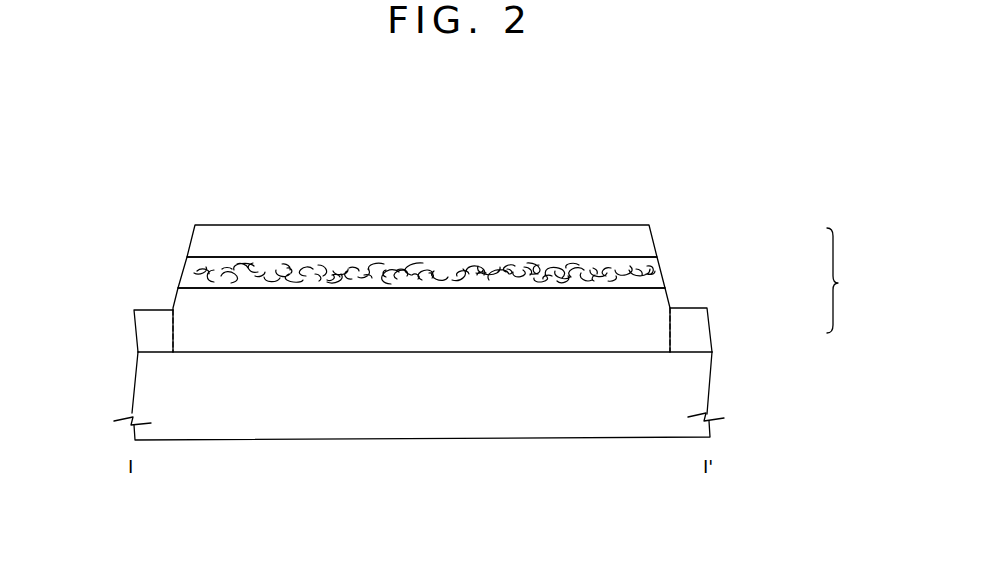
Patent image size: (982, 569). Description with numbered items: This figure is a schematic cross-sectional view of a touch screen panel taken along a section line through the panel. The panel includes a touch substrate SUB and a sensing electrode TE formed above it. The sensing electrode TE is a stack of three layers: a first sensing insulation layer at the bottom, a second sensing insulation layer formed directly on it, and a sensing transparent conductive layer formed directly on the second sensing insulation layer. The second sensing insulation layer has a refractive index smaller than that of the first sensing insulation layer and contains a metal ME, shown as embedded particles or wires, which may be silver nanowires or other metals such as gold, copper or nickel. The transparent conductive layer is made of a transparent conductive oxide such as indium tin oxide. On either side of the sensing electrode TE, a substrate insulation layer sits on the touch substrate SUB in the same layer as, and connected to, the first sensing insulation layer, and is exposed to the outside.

The touch substrate SUB is at (690, 381).
The metal ME is at (478, 262).
The sensing electrode TE is at (844, 280).